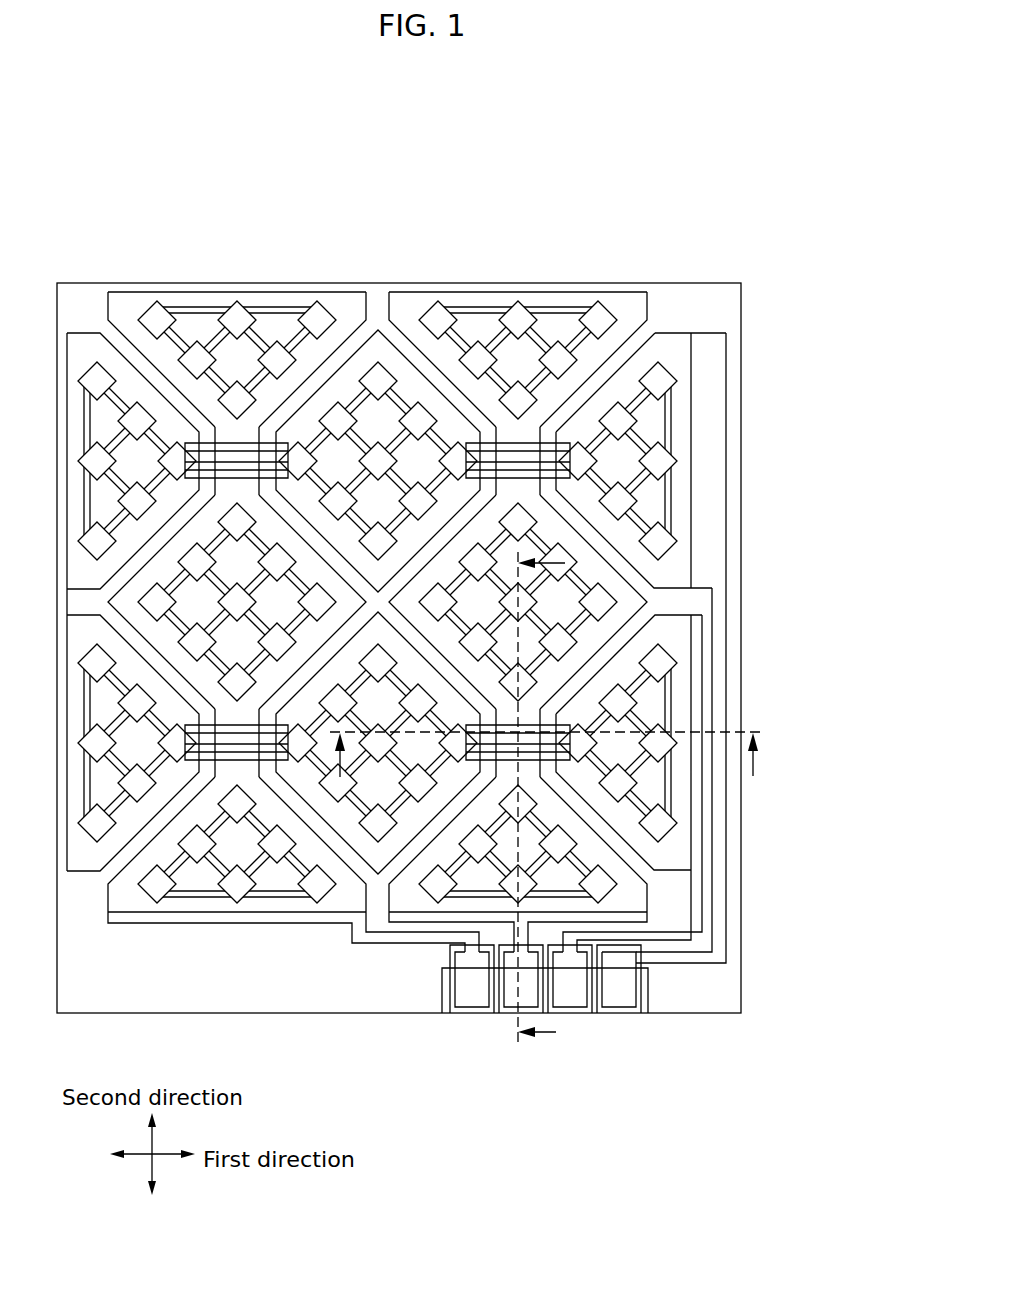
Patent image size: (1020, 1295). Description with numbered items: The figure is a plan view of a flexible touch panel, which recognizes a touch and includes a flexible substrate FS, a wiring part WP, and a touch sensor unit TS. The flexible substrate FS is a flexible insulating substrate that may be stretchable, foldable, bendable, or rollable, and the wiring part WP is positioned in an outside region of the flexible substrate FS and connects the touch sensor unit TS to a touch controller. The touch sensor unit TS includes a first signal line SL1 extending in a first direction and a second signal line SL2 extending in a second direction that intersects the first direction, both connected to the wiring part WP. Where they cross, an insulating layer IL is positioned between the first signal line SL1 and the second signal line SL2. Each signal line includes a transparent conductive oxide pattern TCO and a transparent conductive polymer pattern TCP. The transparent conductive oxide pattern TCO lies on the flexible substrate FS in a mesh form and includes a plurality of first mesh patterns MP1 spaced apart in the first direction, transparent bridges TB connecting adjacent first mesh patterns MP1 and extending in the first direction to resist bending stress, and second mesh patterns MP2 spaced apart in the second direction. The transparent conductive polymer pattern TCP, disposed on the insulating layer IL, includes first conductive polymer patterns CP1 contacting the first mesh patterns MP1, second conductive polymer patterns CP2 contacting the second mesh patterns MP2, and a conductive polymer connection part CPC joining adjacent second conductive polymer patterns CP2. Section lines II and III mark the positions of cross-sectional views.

The transparent conductive polymer pattern TCP is at (367, 214).
The transparent conductive oxide pattern TCO is at (645, 214).
The first conductive polymer pattern CP1 is at (115, 368).
The second conductive polymer pattern CP2 is at (186, 545).
The conductive polymer connection part CPC is at (237, 432).
The first mesh pattern MP1 is at (412, 415).
The second mesh pattern MP2 is at (563, 552).
The transparent bridge TB is at (485, 432).
The insulating layer IL is at (693, 300).
The flexible substrate FS is at (742, 329).
The wiring part WP is at (712, 413).
The touch sensor unit TS is at (430, 557).
The section line III- III is at (565, 563).
The section line II- II is at (320, 1040).
The first signal line SL1 is at (655, 708).
The second signal line SL2 is at (563, 882).